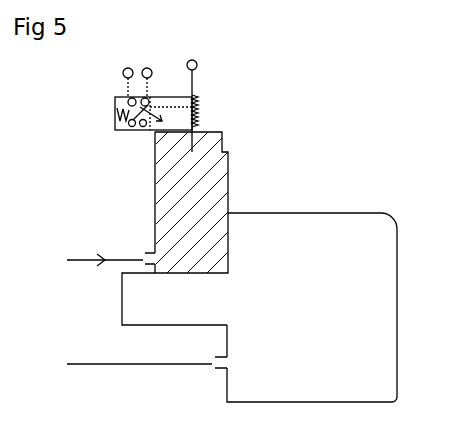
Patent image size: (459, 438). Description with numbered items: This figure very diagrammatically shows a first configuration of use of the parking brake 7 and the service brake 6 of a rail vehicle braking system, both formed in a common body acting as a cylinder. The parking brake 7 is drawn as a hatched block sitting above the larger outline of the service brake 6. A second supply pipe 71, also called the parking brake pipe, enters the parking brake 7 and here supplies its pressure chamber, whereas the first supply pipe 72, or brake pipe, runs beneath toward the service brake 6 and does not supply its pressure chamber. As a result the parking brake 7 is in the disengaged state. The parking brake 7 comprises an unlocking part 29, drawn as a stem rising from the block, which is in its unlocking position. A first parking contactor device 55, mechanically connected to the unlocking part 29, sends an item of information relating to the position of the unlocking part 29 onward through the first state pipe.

The service brake 6 is at (324, 321).
The parking brake 7 is at (195, 208).
The unlocking part 29 is at (197, 68).
The first parking contactor device 55 is at (115, 115).
The second supply pipe 71 is at (96, 256).
The first supply pipe 72 is at (92, 363).